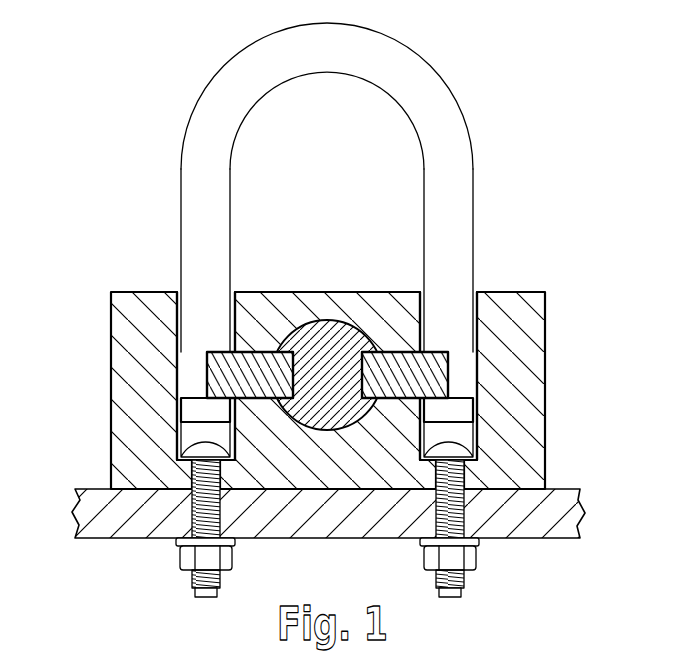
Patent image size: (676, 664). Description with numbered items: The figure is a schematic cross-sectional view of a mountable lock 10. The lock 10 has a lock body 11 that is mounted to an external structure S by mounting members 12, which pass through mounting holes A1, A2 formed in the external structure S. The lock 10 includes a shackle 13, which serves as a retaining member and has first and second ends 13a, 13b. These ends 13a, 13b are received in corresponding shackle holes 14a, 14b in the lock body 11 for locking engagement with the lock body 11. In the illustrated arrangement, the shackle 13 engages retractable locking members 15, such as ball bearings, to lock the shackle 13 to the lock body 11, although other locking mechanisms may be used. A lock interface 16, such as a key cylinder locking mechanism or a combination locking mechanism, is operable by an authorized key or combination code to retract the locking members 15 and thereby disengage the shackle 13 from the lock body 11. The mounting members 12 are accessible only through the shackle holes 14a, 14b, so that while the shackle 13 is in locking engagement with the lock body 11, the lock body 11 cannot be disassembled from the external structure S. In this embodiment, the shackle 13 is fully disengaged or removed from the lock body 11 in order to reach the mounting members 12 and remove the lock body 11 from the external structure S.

The lock 10 is at (62, 279).
The lock body 11 is at (517, 378).
The mounting members 12 is at (197, 576).
The shackle 13 is at (340, 243).
The first end of shackle 13a is at (193, 390).
The second end of shackle 13b is at (462, 402).
The first shackle hole 14a is at (233, 300).
The second shackle hole 14b is at (477, 313).
The retractable locking members 15 is at (228, 372).
The lock interface 16 is at (346, 362).
The mounting hole A1 is at (197, 523).
The mounting hole A2 is at (433, 528).
The external structure S is at (548, 525).